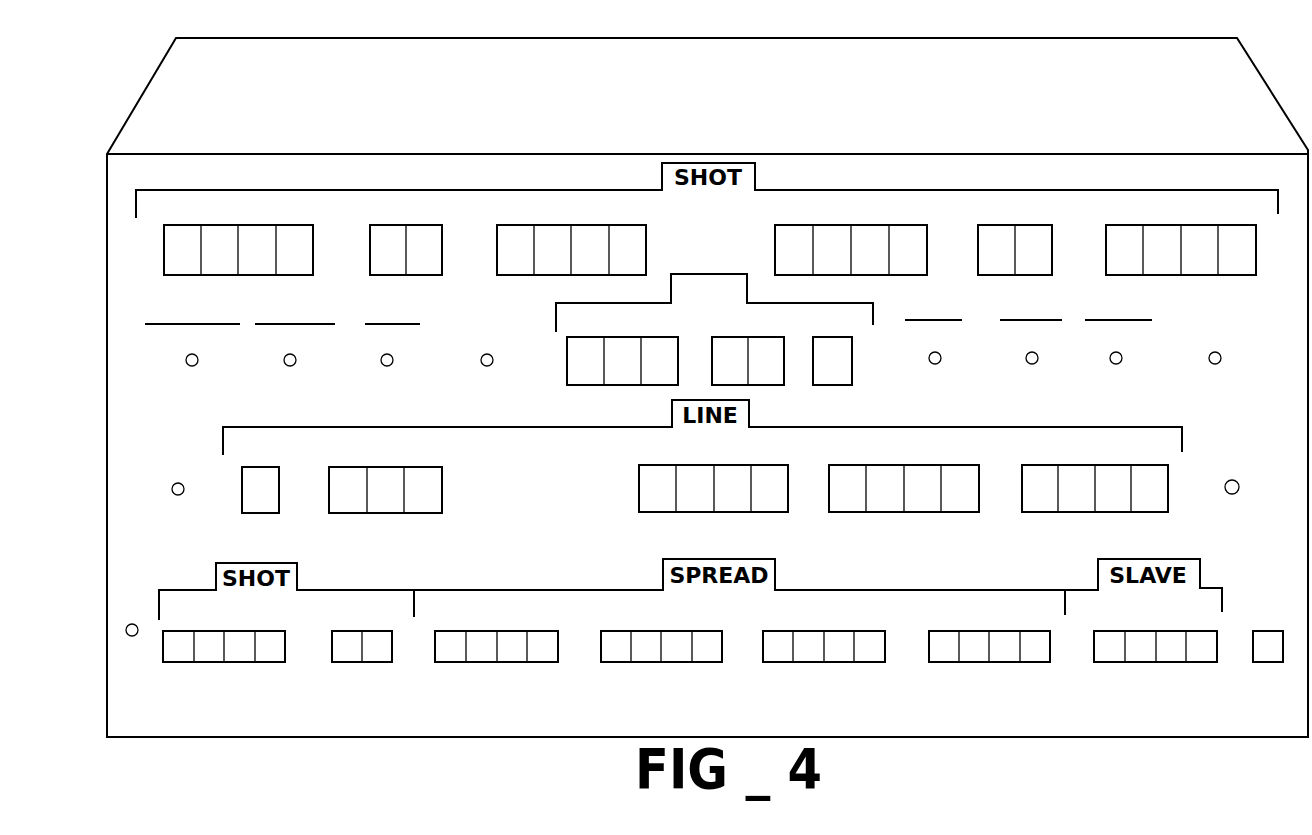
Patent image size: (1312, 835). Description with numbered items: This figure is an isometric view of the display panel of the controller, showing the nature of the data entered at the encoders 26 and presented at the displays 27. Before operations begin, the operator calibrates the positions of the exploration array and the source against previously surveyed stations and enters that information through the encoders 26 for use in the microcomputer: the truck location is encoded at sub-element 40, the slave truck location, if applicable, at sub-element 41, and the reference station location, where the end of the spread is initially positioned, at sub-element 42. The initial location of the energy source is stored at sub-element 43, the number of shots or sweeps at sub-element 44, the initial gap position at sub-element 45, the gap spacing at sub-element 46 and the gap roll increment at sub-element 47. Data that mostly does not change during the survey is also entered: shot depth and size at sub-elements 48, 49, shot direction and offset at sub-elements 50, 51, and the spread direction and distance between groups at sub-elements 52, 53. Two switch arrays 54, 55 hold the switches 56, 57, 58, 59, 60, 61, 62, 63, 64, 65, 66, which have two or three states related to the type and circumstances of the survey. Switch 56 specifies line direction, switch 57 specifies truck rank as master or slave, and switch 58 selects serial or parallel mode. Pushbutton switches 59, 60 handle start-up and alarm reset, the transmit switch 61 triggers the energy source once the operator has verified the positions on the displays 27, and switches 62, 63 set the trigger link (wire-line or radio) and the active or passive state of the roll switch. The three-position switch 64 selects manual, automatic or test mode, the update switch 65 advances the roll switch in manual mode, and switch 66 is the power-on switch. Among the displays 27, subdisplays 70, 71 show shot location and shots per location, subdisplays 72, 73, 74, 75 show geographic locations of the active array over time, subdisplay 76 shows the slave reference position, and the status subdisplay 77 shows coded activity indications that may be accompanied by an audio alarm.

The encoders 26 is at (1262, 140).
The displays 27 is at (1038, 676).
The sub-element 40 is at (650, 512).
The sub-element 41 is at (860, 512).
The sub-element 42 is at (1035, 511).
The sub-element 43 is at (300, 227).
The sub-element 44 is at (433, 225).
The sub-element 45 is at (627, 337).
The sub-element 46 is at (757, 385).
The sub-element 47 is at (822, 385).
The sub-element 48 is at (624, 225).
The sub-element 49 is at (890, 225).
The sub-element 50 is at (1042, 225).
The sub-element 51 is at (1237, 225).
The sub-element 52 is at (280, 495).
The sub-element 53 is at (370, 513).
The switch array 54 is at (145, 362).
The switch array 55 is at (1245, 352).
The switch 56 is at (198, 360).
The switch 57 is at (296, 360).
The switch 58 is at (393, 360).
The pushbutton switch 59 is at (493, 360).
The pushbutton switch 60 is at (171, 489).
The transmit switch 61 is at (126, 627).
The switch 62 is at (941, 358).
The switch 63 is at (1038, 358).
The three-position switch 64 is at (1108, 362).
The update switch 65 is at (1215, 364).
The power-on switch 66 is at (1240, 491).
The subdisplay 70 is at (272, 663).
The subdisplay 71 is at (373, 663).
The subdisplay 72 is at (518, 663).
The subdisplay 73 is at (680, 662).
The subdisplay 74 is at (833, 662).
The subdisplay 75 is at (993, 662).
The subdisplay 76 is at (1137, 662).
The status subdisplay 77 is at (1265, 630).